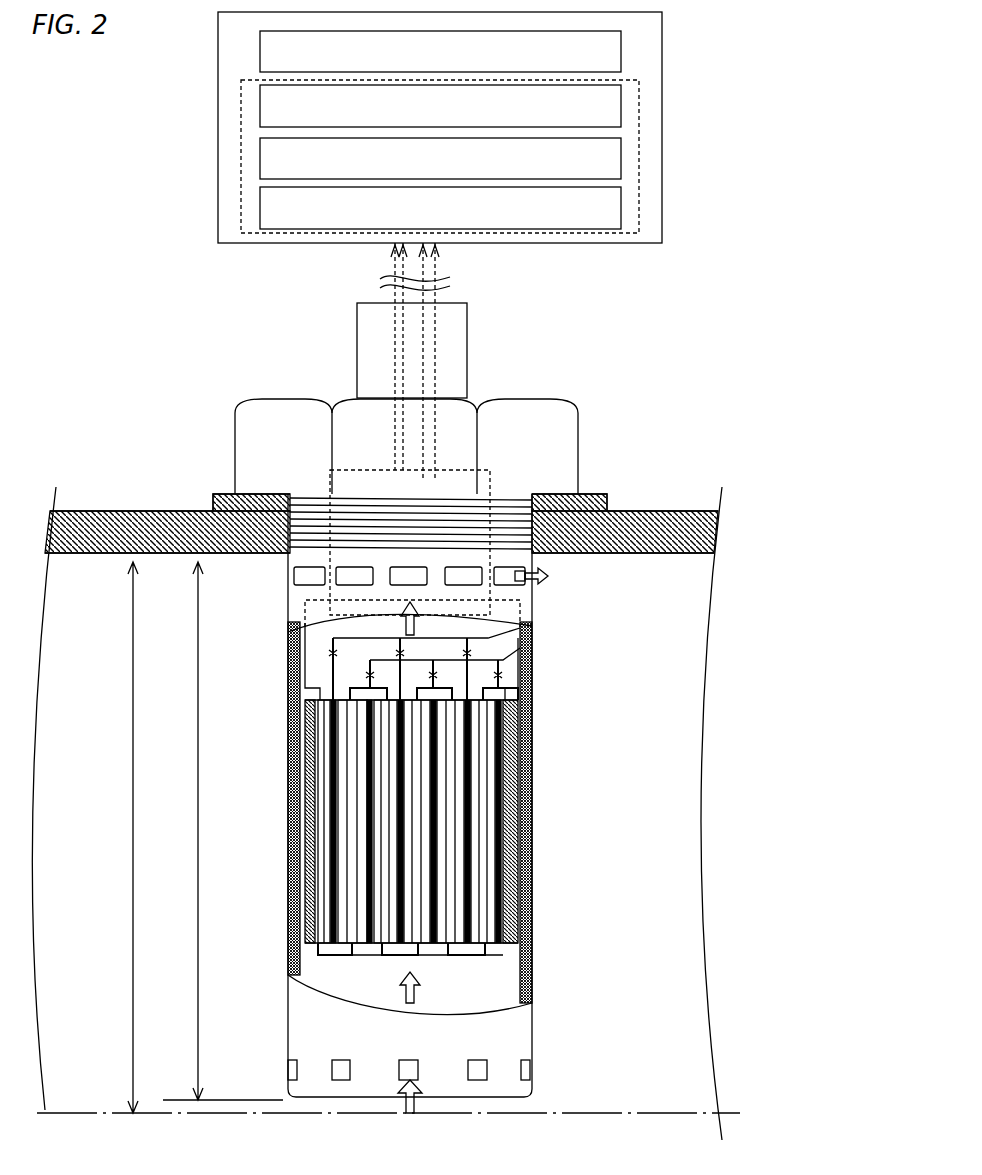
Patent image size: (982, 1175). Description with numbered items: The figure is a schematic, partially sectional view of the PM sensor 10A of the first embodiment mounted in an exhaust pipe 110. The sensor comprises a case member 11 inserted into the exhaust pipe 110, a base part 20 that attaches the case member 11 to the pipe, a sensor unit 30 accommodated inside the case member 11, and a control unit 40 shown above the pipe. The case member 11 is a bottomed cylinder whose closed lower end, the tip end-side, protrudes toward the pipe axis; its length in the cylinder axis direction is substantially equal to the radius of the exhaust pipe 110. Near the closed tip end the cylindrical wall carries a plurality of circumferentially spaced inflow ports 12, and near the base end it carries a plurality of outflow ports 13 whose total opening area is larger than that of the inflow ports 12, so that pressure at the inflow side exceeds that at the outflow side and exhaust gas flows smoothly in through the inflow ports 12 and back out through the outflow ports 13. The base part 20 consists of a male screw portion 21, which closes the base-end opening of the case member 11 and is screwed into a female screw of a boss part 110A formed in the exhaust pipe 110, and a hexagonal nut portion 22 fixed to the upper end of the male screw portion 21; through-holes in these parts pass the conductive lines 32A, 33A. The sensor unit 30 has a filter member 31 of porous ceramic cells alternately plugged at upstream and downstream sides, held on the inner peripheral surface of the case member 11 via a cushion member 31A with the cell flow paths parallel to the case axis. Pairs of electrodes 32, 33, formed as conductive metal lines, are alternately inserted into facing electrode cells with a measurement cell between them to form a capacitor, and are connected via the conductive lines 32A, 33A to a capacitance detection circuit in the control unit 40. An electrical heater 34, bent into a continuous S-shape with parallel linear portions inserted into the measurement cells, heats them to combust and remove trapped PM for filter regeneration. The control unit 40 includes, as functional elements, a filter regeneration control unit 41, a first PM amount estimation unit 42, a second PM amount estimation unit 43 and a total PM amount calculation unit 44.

The PM sensor 10A is at (281, 343).
The case member 11 is at (517, 1033).
The inflow ports 12 is at (343, 1073).
The outflow ports 13 is at (300, 576).
The base part 20 is at (446, 466).
The male screw portion 21 is at (533, 497).
The nut portion 22 is at (570, 462).
The sensor unit 30 is at (467, 803).
The filter member 31 is at (527, 822).
The cushion member 31A is at (530, 752).
The electrode 32 is at (466, 852).
The conductive line 32A is at (532, 627).
The electrode 33 is at (530, 884).
The conductive line 33A is at (532, 655).
The electrical heater 34 is at (503, 957).
The control unit 40 is at (430, 127).
The filter regeneration control unit 41 is at (621, 62).
The first PM amount estimation unit 42 is at (621, 115).
The second PM amount estimation unit 43 is at (621, 168).
The total PM amount calculation unit 44 is at (621, 220).
The exhaust pipe 110 is at (113, 510).
The boss part 110A is at (223, 505).